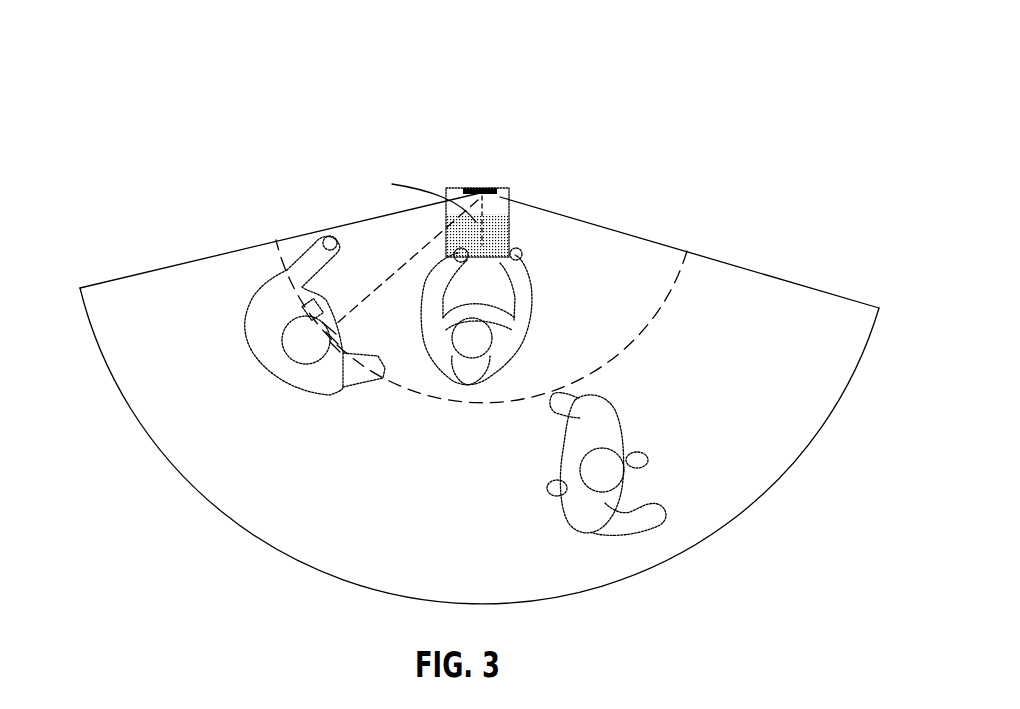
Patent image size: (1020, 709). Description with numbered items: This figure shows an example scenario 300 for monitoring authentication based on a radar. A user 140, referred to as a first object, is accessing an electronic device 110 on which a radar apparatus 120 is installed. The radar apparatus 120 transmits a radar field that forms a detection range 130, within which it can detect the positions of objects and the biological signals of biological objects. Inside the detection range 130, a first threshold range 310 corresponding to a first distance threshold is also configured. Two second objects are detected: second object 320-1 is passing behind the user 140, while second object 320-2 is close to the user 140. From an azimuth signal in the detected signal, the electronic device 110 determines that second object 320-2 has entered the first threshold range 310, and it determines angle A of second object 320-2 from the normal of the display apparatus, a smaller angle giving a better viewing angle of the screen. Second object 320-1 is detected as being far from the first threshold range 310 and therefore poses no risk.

The example scenario 300 is at (318, 126).
The electronic device 110 is at (510, 200).
The radar apparatus 120 is at (487, 189).
The detection range 130 is at (805, 283).
The user 140 is at (533, 290).
The first threshold range 310 is at (262, 244).
The second object 320-1 is at (608, 535).
The second object 320-2 is at (258, 335).